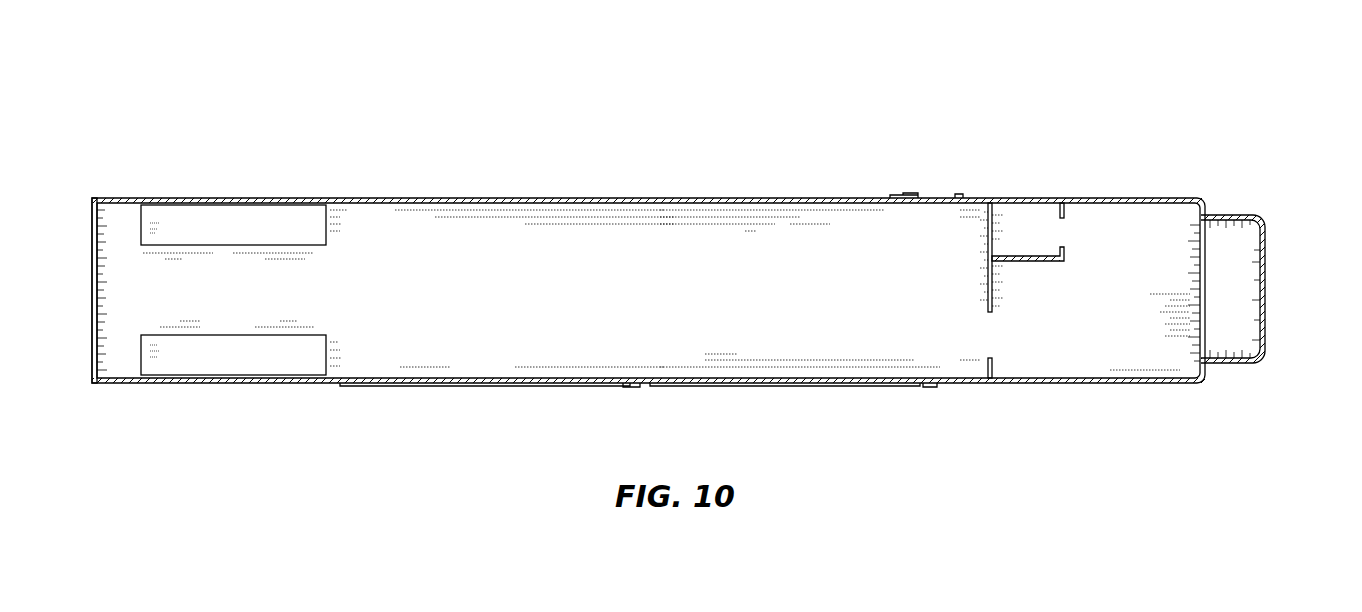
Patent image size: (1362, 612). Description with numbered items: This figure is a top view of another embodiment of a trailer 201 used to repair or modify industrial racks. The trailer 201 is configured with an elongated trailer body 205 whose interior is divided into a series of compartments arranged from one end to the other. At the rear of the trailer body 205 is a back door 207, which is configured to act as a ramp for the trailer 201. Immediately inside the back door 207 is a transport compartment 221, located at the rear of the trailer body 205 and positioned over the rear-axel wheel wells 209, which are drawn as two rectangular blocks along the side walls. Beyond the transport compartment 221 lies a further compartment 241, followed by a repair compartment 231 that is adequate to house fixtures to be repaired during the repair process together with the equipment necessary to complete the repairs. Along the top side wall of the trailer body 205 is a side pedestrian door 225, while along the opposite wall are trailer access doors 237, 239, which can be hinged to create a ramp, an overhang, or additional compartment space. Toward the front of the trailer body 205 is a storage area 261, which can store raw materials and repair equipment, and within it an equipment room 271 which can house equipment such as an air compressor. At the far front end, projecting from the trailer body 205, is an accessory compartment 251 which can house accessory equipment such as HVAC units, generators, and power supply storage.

The trailer 201 is at (308, 74).
The trailer body 205 is at (553, 200).
The back door 207 is at (91, 303).
The rear-axel wheel wells 209 is at (190, 213).
The transport compartment 221 is at (254, 302).
The side pedestrian door 225 is at (933, 200).
The repair compartment 231 is at (838, 302).
The trailer access door 237 is at (448, 383).
The trailer access door 239 is at (800, 383).
The second compartment 241 is at (422, 302).
The accessory compartment 251 is at (1248, 271).
The storage area 261 is at (1109, 329).
The equipment room 271 is at (1033, 213).